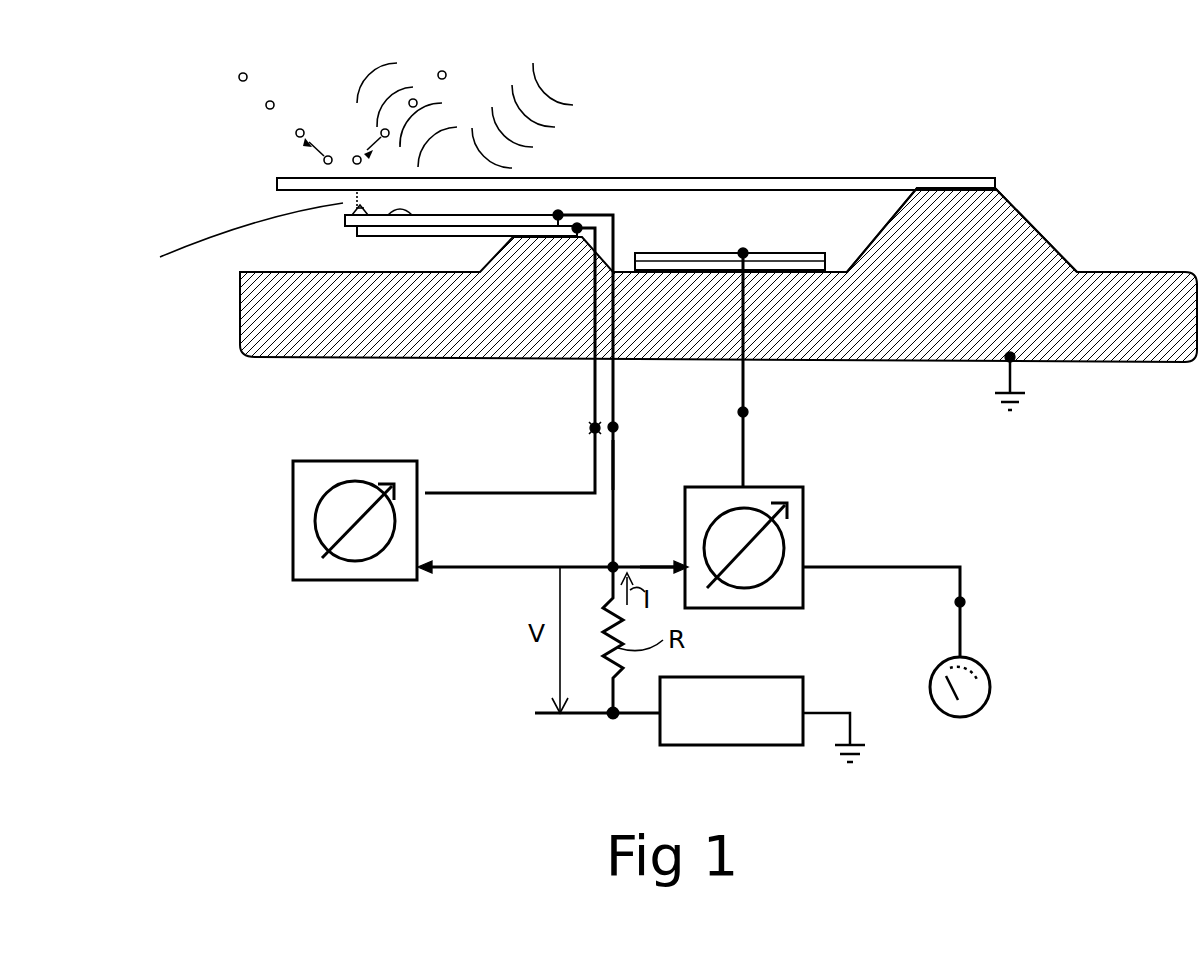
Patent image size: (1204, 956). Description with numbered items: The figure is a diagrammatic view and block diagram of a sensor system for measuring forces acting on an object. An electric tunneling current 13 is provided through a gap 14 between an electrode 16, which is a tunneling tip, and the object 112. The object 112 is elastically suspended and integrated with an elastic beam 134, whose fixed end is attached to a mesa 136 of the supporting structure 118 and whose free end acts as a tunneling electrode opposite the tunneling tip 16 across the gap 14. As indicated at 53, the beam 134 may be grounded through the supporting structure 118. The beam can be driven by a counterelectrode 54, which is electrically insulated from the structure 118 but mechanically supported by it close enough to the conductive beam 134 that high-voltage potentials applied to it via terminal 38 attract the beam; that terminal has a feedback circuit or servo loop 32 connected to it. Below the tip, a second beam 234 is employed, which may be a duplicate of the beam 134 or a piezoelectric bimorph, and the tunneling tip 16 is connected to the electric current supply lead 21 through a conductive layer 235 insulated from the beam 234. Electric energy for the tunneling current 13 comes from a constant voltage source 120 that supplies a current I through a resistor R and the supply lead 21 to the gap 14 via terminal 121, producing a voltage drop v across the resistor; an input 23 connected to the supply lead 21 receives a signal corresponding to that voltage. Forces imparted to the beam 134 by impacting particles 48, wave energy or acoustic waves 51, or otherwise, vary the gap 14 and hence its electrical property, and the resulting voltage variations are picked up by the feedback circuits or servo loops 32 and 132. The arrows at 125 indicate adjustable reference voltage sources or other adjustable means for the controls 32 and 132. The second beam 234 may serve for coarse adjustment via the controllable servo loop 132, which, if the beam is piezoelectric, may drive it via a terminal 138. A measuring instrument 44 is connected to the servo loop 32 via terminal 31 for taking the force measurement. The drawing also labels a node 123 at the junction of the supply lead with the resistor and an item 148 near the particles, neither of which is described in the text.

The electric tunneling current 13 is at (342, 200).
The gap 14 is at (233, 239).
The electrode 16 is at (352, 214).
The current supply lead 21 is at (613, 463).
The input 23 is at (668, 565).
The terminal 31 is at (960, 602).
The feedback circuit or servo loop 32 is at (803, 493).
The terminal 38 is at (745, 412).
The measuring instrument 44 is at (988, 698).
The impacting particles 48 is at (441, 71).
The acoustic waves 51 is at (541, 110).
The ground 53 is at (1015, 385).
The counterelectrode 54 is at (780, 252).
The object 112 is at (290, 174).
The supporting structure 118 is at (285, 302).
The constant voltage source 120 is at (788, 677).
The terminal 121 is at (613, 428).
The junction node 123 is at (613, 567).
The adjustable reference voltage source 125 is at (345, 580).
The feedback circuit or servo loop 132 is at (293, 513).
The elastic beam 134 is at (922, 143).
The mesa 136 is at (1053, 243).
The terminal 138 is at (595, 428).
The ions 148 is at (266, 105).
The second beam 234 is at (410, 214).
The conductive layer 235 is at (363, 212).